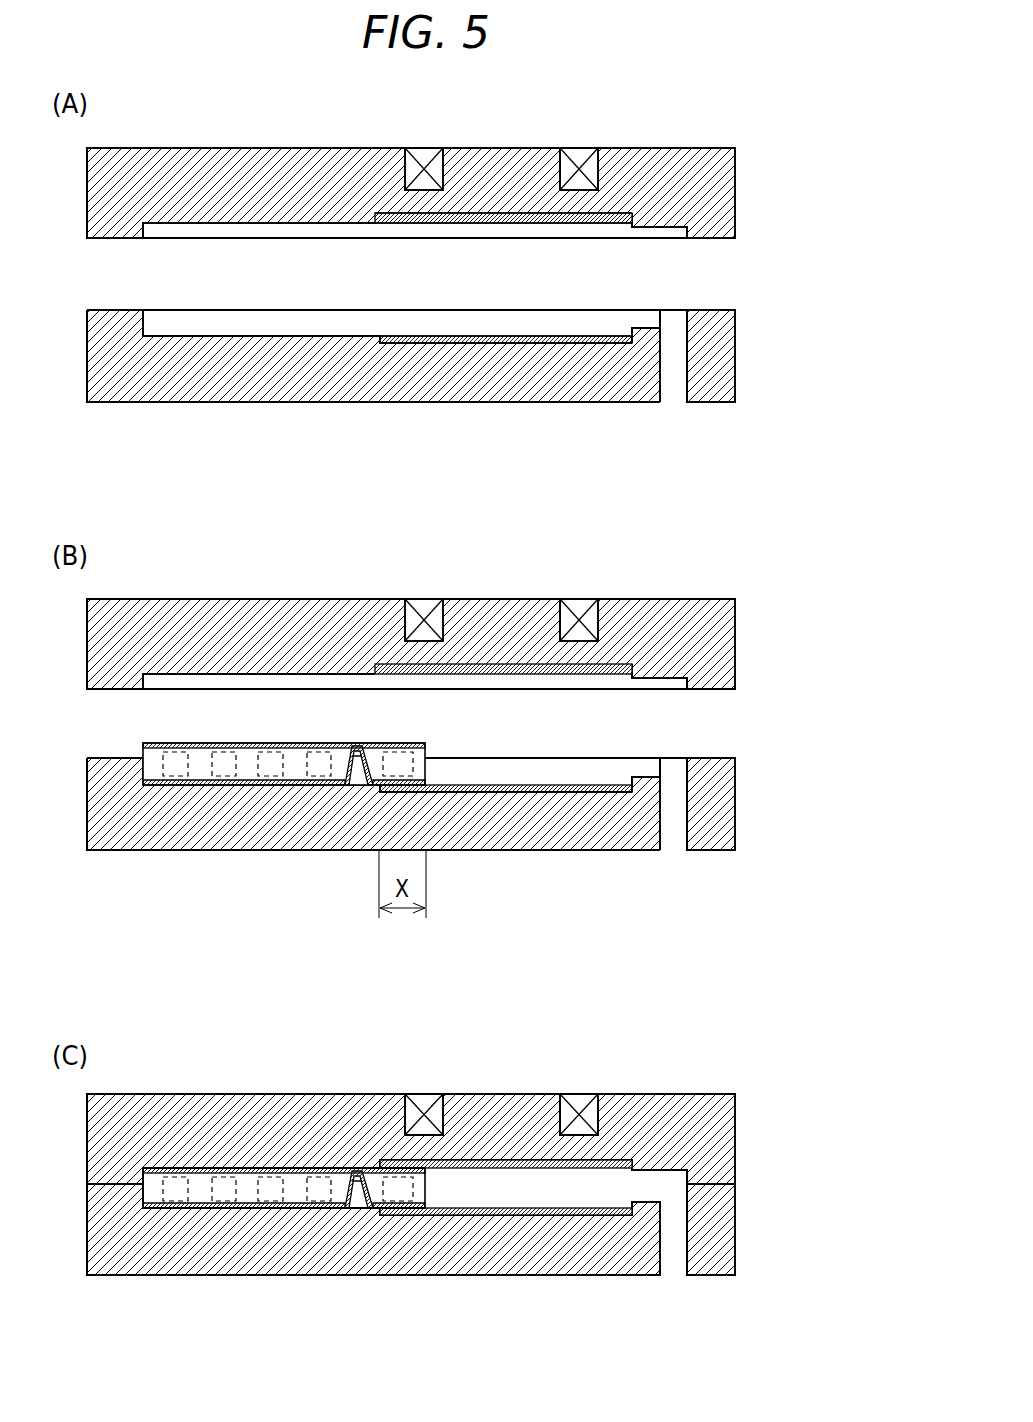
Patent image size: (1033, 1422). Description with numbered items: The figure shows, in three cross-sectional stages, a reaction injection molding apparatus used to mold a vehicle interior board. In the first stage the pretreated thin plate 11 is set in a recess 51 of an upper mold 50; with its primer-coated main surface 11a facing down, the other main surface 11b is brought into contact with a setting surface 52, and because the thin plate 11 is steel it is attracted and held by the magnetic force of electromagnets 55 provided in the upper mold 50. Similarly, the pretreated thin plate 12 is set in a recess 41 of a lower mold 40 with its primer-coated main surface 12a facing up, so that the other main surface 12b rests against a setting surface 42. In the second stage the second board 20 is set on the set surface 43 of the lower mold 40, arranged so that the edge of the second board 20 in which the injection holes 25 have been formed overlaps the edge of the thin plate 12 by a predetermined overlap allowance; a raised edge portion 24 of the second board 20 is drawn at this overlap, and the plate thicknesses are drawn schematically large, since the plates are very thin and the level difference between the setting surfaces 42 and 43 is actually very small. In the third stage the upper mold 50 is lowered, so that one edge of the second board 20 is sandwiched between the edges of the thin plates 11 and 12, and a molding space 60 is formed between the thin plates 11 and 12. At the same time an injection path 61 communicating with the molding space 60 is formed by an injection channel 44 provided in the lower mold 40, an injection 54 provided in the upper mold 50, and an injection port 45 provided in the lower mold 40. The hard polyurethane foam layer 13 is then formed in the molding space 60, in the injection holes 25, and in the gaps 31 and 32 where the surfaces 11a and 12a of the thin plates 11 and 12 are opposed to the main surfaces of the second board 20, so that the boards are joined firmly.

The thin plate 11 is at (565, 223).
The main surface of thin plate 11a is at (480, 225).
The main surface of thin plate 11b is at (540, 213).
The thin plate 12 is at (607, 333).
The main surface of thin plate 12a is at (530, 336).
The main surface of thin plate 12b is at (520, 345).
The hard polyurethane foam layer 13 is at (505, 1183).
The second board 20 is at (274, 1011).
The protruding joint portion 24 is at (355, 780).
The injection holes 25 is at (420, 747).
The gap 31 is at (388, 1168).
The gap 32 is at (385, 1212).
The lower mold 40 is at (737, 355).
The recess 41 is at (385, 310).
The setting surface 42 is at (445, 336).
The set surface 43 is at (270, 780).
The injection channel 44 is at (665, 318).
The injection port 45 is at (675, 395).
The upper mold 50 is at (737, 175).
The recess 51 is at (420, 238).
The setting surface 52 is at (520, 223).
The injection 54 is at (700, 238).
The electromagnets 55 is at (425, 148).
The molding space 60 is at (605, 1178).
The injection path 61 is at (663, 1180).